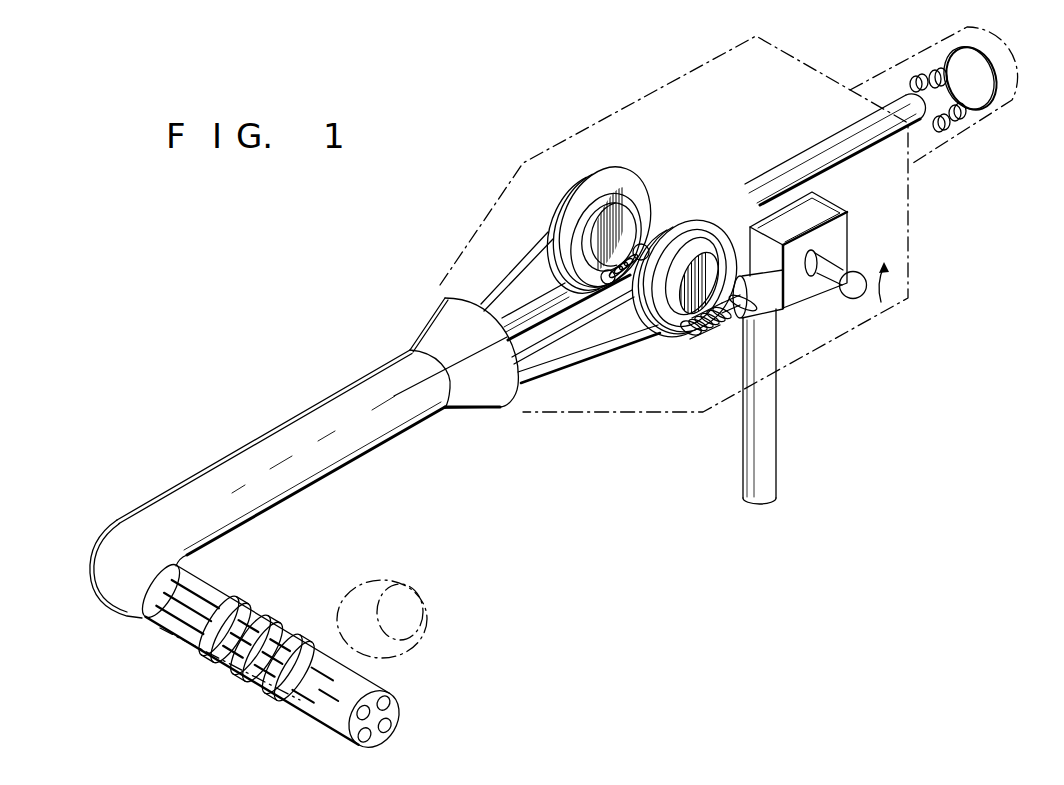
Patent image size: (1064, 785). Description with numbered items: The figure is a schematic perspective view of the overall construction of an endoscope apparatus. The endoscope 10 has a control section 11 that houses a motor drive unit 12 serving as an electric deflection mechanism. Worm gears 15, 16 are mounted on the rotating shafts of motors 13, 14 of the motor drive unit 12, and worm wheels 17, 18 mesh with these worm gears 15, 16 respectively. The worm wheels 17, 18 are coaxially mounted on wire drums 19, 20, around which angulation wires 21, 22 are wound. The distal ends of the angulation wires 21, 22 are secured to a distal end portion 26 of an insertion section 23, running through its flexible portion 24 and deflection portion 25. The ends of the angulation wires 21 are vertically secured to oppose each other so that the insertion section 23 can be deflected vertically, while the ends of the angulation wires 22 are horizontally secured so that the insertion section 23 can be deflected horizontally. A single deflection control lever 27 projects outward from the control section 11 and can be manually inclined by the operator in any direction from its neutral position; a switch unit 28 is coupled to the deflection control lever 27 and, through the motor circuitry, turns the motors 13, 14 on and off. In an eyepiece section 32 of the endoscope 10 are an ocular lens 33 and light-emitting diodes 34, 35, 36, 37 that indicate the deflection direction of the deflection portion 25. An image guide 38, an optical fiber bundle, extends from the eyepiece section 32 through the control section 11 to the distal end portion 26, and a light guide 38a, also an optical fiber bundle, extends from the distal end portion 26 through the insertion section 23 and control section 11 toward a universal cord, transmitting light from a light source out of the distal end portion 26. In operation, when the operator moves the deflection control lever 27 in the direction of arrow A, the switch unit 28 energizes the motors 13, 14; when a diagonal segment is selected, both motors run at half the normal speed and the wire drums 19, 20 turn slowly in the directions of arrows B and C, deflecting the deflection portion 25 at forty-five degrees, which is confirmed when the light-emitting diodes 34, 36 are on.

The endoscope 10 is at (383, 327).
The control section 11 is at (596, 125).
The motor drive unit 12 is at (681, 205).
The motor 13 is at (780, 312).
The motor 14 is at (640, 243).
The worm gear 15 is at (709, 340).
The worm gear 16 is at (617, 314).
The worm wheel 17 is at (746, 280).
The worm wheel 18 is at (627, 176).
The wire drum 19 is at (665, 338).
The wire drum 20 is at (581, 215).
The angulation wires 21 is at (560, 370).
The angulation wires 22 is at (515, 318).
The insertion section 23 is at (208, 463).
The flexible portion 24 is at (305, 490).
The deflection portion 25 is at (280, 630).
The distal end portion 26 is at (371, 678).
The deflection control lever 27 is at (834, 289).
The switch unit 28 is at (846, 240).
The eyepiece section 32 is at (885, 72).
The ocular lens 33 is at (987, 103).
The light-emitting diode 34 is at (932, 70).
The light-emitting diode 35 is at (946, 132).
The light-emitting diode 36 is at (960, 119).
The light-emitting diode 37 is at (912, 87).
The image guide 38 is at (806, 162).
The light guide 38a is at (772, 452).
The arrow A is at (900, 285).
The arrow B is at (605, 230).
The arrow C is at (691, 280).